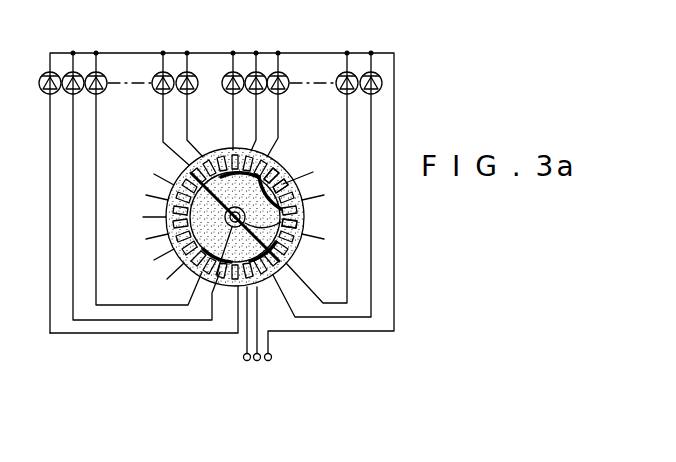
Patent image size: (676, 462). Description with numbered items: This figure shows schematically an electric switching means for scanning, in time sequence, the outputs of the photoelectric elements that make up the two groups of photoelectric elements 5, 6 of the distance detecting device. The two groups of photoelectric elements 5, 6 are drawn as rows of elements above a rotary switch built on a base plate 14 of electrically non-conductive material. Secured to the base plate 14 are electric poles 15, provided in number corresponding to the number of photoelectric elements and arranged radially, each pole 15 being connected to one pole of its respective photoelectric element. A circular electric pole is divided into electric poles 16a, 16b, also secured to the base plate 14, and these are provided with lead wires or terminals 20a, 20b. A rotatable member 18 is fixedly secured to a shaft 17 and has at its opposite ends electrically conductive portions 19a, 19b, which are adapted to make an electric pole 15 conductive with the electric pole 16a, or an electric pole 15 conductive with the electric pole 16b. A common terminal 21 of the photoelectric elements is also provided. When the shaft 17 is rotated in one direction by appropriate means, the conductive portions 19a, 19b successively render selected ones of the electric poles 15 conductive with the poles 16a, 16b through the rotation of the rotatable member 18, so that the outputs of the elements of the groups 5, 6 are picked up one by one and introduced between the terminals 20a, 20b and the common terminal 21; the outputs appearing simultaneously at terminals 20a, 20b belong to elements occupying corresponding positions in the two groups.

The group of photoelectric elements 5 is at (394, 49).
The group of photoelectric elements 6 is at (47, 49).
The base plate 14 is at (273, 157).
The electric poles 15 is at (290, 167).
The electric pole 16a is at (288, 176).
The electric pole 16b is at (177, 272).
The shaft 17 is at (217, 288).
The rotatable member 18 is at (303, 214).
The electrically conductive portion 19a is at (285, 262).
The electrically conductive portion 19b is at (181, 168).
The terminal 20a is at (262, 360).
The terminal 20b is at (244, 358).
The common terminal 21 is at (275, 353).